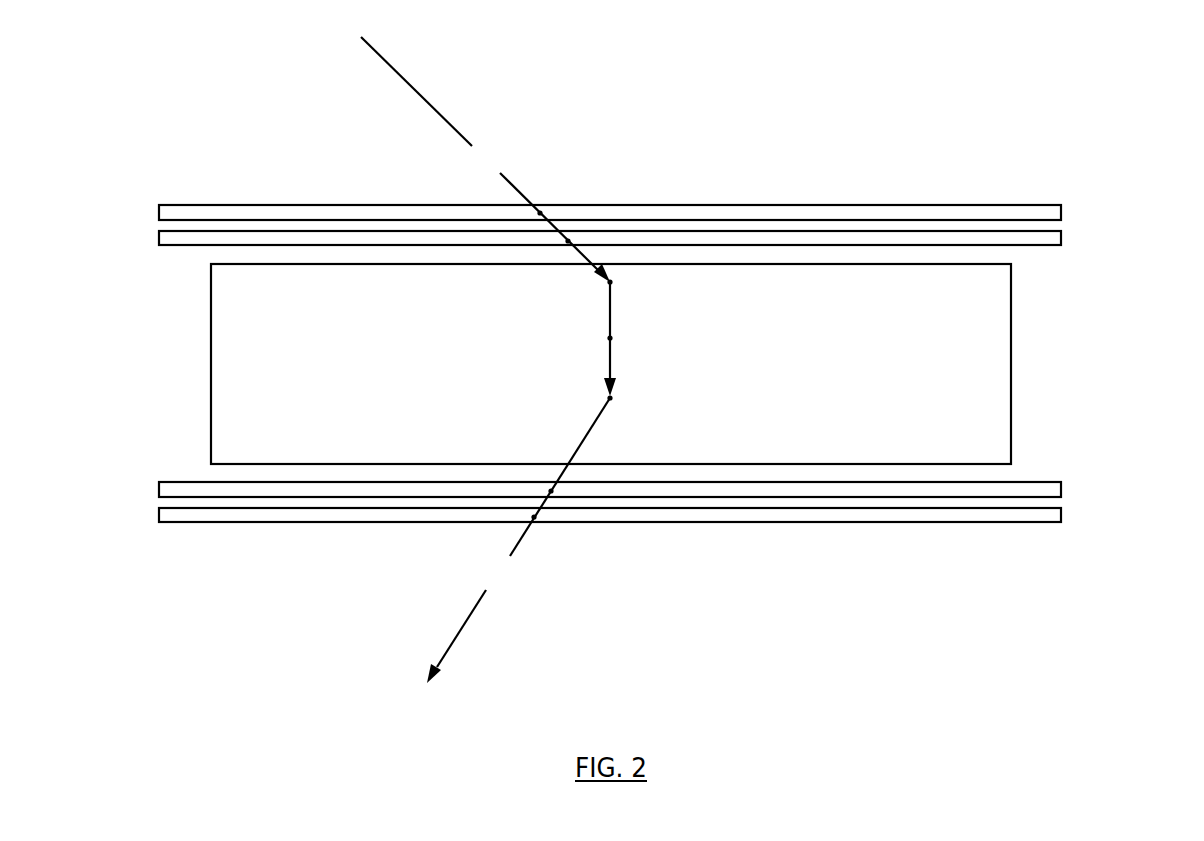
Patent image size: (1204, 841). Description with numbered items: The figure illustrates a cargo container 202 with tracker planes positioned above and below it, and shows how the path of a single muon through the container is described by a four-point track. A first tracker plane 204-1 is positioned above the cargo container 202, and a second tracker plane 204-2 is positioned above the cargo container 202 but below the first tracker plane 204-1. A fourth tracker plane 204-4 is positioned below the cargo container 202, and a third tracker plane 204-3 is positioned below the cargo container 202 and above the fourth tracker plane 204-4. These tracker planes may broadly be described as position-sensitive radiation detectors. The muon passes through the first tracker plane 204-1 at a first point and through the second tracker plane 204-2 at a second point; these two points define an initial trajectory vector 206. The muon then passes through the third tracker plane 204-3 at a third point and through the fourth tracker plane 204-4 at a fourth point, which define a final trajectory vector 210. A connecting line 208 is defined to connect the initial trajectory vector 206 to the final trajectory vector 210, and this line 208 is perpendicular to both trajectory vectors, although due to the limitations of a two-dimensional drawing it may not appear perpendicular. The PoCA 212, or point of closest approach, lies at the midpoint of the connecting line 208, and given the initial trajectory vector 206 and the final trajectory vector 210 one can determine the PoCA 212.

The cargo container 202 is at (382, 299).
The first tracker plane 204-1 is at (1061, 214).
The second tracker plane 204-2 is at (1061, 240).
The third tracker plane 204-3 is at (1061, 490).
The fourth tracker plane 204-4 is at (1061, 516).
The initial trajectory vector 206 is at (487, 161).
The connecting line 208 is at (609, 315).
The final trajectory vector 210 is at (520, 539).
The PoCA 212 is at (610, 338).